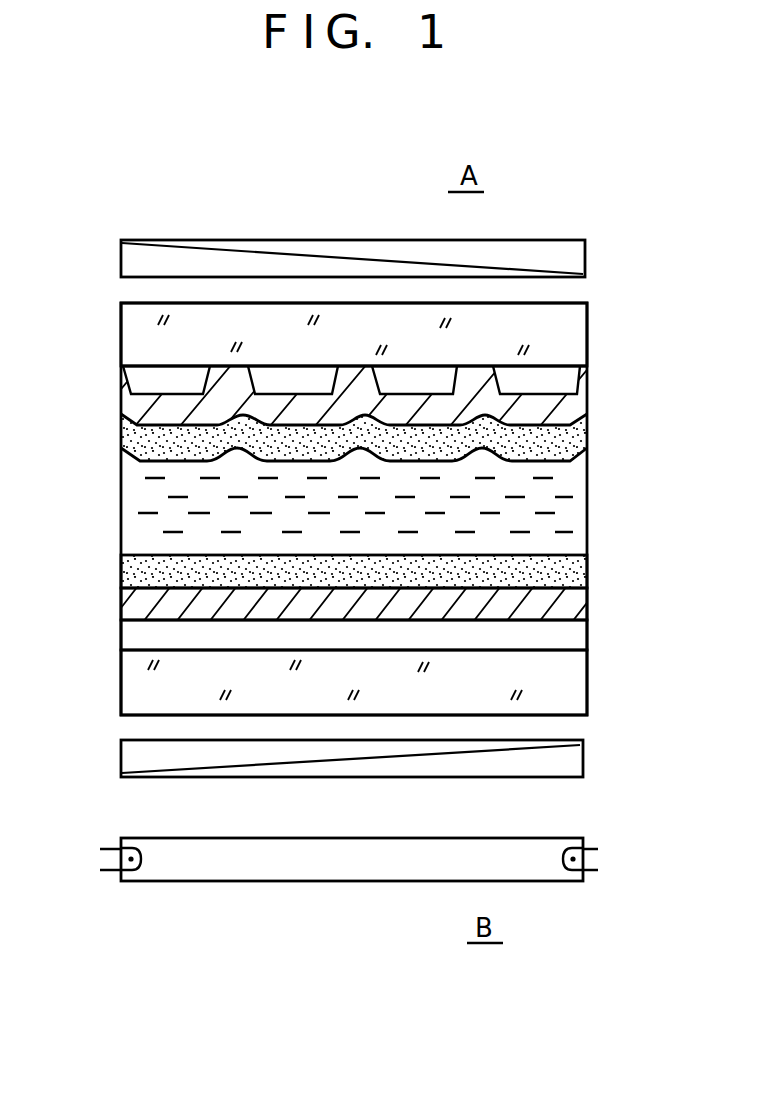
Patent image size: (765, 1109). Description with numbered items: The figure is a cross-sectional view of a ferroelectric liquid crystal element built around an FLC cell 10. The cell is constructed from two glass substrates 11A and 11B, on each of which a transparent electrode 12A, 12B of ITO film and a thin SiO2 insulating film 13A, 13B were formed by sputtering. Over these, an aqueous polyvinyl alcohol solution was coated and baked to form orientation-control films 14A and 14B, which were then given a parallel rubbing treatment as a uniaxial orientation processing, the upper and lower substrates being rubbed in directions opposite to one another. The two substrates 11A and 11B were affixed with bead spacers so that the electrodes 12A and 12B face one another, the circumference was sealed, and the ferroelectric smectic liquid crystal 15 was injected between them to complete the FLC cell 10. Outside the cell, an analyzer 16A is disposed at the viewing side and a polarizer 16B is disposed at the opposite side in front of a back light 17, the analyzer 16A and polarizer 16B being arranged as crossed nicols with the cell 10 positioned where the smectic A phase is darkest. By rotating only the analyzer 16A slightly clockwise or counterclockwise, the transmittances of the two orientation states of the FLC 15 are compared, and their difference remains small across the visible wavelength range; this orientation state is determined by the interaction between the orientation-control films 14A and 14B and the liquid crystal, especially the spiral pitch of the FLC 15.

The FLC cell 10 is at (82, 710).
The glass substrate 11A is at (573, 335).
The glass substrate 11B is at (570, 690).
The transparent electrode 12A is at (567, 385).
The transparent electrode 12B is at (570, 643).
The SiO2 insulating film 13A is at (570, 418).
The SiO2 insulating film 13B is at (570, 607).
The orientation-control film 14A is at (578, 448).
The orientation-control film 14B is at (570, 570).
The ferroelectric smectic liquid crystal 15 is at (570, 505).
The analyzer 16A is at (577, 262).
The polarizer 16B is at (573, 762).
The back light 17 is at (587, 890).